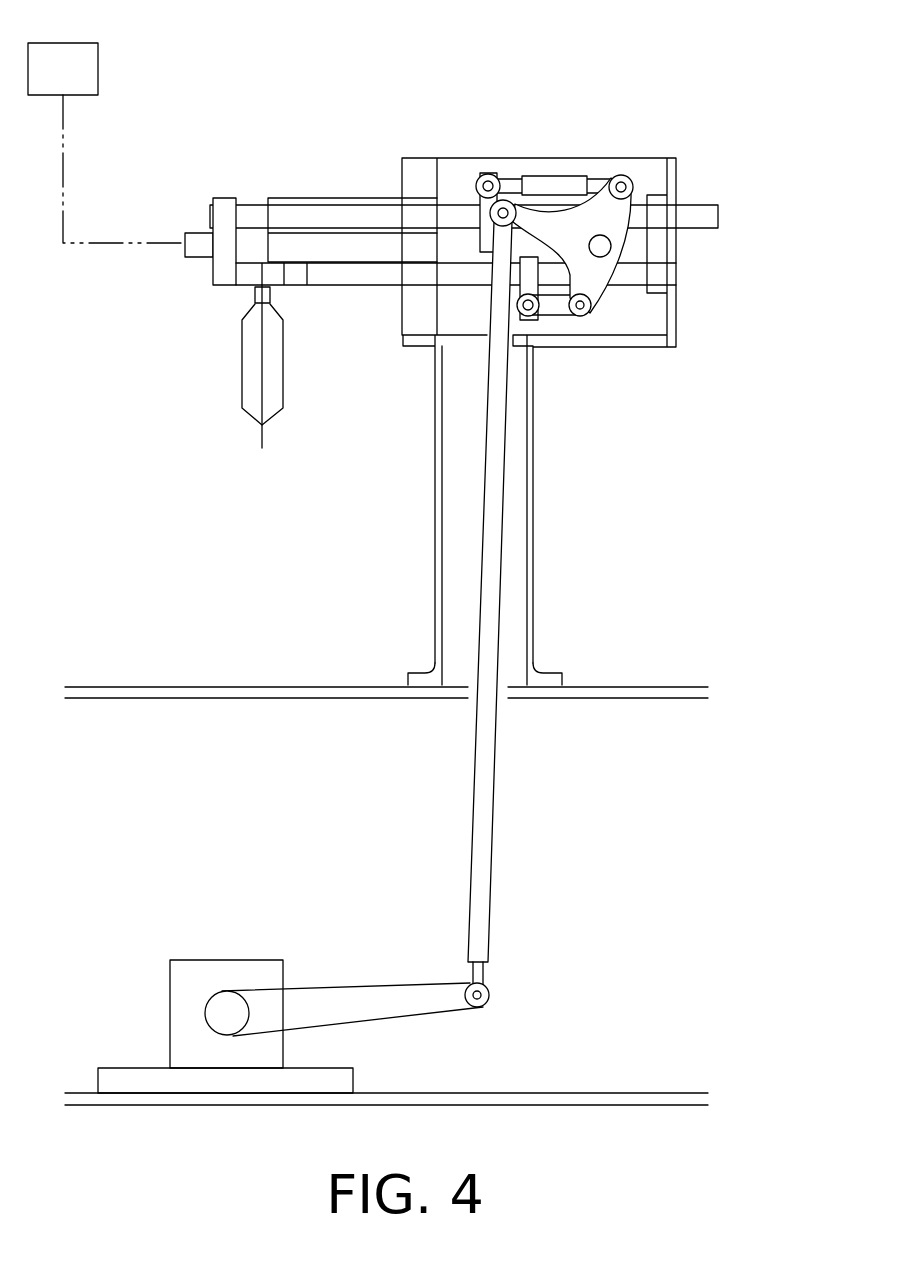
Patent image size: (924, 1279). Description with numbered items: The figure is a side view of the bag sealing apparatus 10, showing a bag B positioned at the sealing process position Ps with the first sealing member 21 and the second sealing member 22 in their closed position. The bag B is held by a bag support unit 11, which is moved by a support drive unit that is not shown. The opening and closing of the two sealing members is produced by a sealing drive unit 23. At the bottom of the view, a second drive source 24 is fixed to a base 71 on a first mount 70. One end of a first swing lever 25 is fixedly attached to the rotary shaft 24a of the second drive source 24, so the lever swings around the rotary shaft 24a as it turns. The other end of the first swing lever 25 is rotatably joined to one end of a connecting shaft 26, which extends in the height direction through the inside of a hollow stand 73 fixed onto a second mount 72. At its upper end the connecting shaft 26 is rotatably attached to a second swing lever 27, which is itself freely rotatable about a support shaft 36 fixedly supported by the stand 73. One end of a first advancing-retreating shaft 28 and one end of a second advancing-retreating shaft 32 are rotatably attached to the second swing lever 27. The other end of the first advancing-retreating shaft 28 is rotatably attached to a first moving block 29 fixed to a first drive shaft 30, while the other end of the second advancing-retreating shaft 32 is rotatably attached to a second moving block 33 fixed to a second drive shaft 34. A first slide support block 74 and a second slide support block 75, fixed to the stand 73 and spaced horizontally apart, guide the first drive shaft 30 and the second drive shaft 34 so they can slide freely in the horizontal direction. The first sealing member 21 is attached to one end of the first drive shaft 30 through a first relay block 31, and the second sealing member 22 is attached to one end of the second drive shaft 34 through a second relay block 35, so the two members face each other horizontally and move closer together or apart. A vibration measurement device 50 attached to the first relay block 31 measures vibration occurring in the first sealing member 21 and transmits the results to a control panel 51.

The bag sealing apparatus 10 is at (713, 66).
The bag support unit 11 is at (257, 297).
The first sealing member 21 is at (245, 275).
The second sealing member 22 is at (270, 271).
The sealing drive unit 23 is at (493, 790).
The second drive source 24 is at (217, 968).
The rotary shaft 24a is at (224, 1004).
The first swing lever 25 is at (369, 996).
The connecting shaft 26 is at (482, 908).
The second swing lever 27 is at (588, 292).
The first advancing-retreating shaft 28 is at (553, 184).
The first moving block 29 is at (482, 215).
The first drive shaft 30 is at (262, 214).
The first relay block 31 is at (224, 207).
The second advancing-retreating shaft 32 is at (555, 314).
The second moving block 33 is at (527, 277).
The second drive shaft 34 is at (377, 279).
The second relay block 35 is at (296, 276).
The support shaft 36 is at (601, 247).
The vibration measurement device 50 is at (197, 240).
The control panel 51 is at (102, 58).
The first mount 70 is at (72, 1100).
The base 71 is at (130, 1078).
The second mount 72 is at (204, 687).
The stand 73 is at (535, 568).
The first slide support block 74 is at (414, 180).
The second slide support block 75 is at (666, 245).
The bag B is at (273, 372).
The sealing process position Ps is at (295, 409).